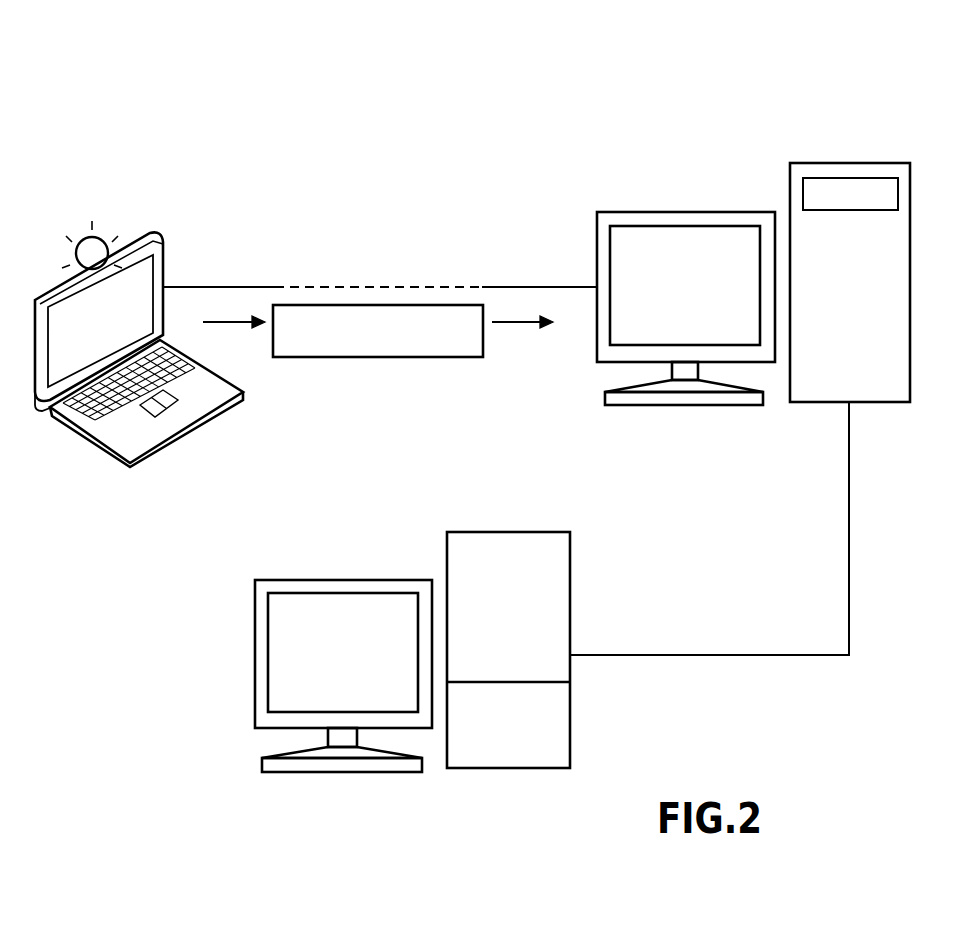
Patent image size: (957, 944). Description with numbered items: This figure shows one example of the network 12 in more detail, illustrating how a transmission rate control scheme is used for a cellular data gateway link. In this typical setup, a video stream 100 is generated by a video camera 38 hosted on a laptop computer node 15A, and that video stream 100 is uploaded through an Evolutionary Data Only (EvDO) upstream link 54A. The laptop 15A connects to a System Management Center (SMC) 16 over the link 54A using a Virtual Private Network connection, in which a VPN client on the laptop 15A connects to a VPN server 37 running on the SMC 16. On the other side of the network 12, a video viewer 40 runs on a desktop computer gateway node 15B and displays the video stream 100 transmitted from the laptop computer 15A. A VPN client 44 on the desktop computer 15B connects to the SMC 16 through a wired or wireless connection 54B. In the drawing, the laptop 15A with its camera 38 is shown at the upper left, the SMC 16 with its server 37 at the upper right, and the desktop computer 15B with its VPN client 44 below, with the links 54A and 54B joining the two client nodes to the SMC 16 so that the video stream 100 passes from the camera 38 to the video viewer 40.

The network 12 is at (280, 78).
The laptop computer node 15A is at (164, 257).
The desktop computer gateway node 15B is at (343, 578).
The System Management Center 16 is at (808, 110).
The VPN server 37 is at (882, 163).
The video camera 38 is at (104, 236).
The video viewer 40 is at (268, 655).
The VPN client 44 is at (570, 723).
The EvDO upstream link 54A is at (554, 285).
The wired or wireless connection 54B is at (712, 657).
The video stream 100 is at (378, 357).